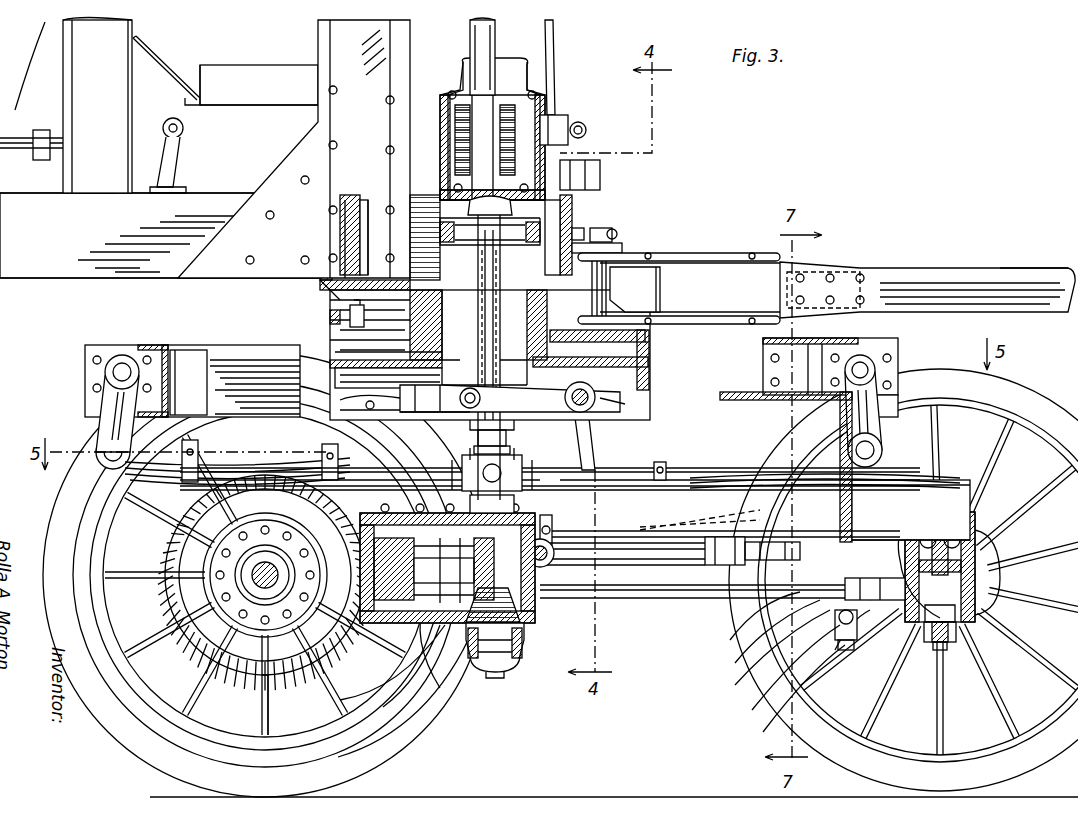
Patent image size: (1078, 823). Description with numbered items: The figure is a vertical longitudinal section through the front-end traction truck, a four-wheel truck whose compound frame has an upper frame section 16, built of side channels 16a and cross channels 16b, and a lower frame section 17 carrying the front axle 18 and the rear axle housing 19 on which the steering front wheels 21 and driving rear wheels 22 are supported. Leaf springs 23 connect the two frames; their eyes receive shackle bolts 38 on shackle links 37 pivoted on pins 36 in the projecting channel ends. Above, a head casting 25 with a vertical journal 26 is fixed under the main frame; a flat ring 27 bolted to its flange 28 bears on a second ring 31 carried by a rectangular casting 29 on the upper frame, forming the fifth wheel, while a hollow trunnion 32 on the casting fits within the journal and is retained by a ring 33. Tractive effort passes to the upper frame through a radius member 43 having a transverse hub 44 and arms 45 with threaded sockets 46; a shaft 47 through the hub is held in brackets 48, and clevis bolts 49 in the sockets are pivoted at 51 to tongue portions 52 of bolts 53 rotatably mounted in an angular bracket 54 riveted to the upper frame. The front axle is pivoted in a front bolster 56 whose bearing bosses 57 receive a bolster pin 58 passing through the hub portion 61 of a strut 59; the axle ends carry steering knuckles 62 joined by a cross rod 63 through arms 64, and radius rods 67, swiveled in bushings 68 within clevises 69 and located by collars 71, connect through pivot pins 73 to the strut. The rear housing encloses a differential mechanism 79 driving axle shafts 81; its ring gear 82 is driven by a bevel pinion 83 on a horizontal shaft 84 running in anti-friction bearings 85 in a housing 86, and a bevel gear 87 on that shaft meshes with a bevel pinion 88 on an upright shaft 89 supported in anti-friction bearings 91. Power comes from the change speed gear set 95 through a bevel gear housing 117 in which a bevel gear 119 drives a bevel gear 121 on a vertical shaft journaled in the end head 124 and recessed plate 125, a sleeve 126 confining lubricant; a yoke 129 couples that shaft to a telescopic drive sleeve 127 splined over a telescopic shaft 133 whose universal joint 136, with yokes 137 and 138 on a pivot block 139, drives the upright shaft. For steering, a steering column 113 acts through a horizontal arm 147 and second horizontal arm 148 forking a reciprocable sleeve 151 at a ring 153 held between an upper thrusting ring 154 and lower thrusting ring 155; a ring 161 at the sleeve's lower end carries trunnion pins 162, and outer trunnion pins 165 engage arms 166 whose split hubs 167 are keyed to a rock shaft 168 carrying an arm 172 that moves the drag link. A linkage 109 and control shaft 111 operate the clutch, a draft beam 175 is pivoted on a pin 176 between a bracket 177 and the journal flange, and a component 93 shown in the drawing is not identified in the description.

The upper frame section 16 is at (78, 330).
The side channels 16a is at (222, 360).
The cross channels 16b is at (160, 345).
The lower frame section 17 is at (950, 483).
The front axle 18 is at (925, 650).
The rear axle housing 19 is at (205, 598).
The front wheels 21 is at (928, 700).
The rear wheels 22 is at (195, 660).
The leaf springs 23 is at (700, 470).
The head casting 25 is at (312, 292).
The vertical journal 26 is at (412, 312).
The flat ring 27 is at (342, 320).
The flange 28 is at (350, 312).
The rectangular casting 29 is at (336, 372).
The fifth wheel section 31 is at (336, 354).
The hollow trunnion 32 is at (475, 357).
The ring 33 is at (428, 290).
The pins 36 is at (113, 380).
The shackle links 37 is at (105, 400).
The shackle bolts 38 is at (108, 470).
The radius member 43 is at (600, 580).
The transverse hub 44 is at (605, 598).
The arms 45 is at (640, 570).
The threaded sockets 46 is at (700, 600).
The shaft 47 is at (620, 545).
The brackets 48 is at (553, 528).
The clevis bolts 49 is at (765, 540).
The pivotal connection 51 is at (846, 520).
The tongue portions 52 is at (753, 623).
The bolts 53 is at (763, 638).
The angular bracket 54 is at (882, 455).
The front bolster 56 is at (978, 540).
The bearing bosses 57 is at (928, 540).
The bolster pin 58 is at (1000, 530).
The strut 59 is at (890, 645).
The hub portion 61 is at (940, 545).
The steering knuckles 62 is at (945, 652).
The cross rod 63 is at (838, 645).
The arms 64 is at (830, 665).
The radius rods 67 is at (660, 600).
The bushing 68 is at (780, 675).
The clevis 69 is at (789, 697).
The collar 71 is at (769, 653).
The pivot pin 73 is at (832, 650).
The differential mechanism 79 is at (202, 584).
The axle shafts 81 is at (250, 590).
The ring gear 82 is at (293, 672).
The bevel pinion 83 is at (330, 678).
The horizontal shaft 84 is at (340, 658).
The anti-friction bearings 85 is at (392, 671).
The housing 86 is at (380, 720).
The bevel gear 87 is at (435, 644).
The bevel pinion 88 is at (530, 620).
The upright shaft 89 is at (530, 605).
The anti-friction bearings 91 is at (522, 663).
The frame 93 is at (48, 78).
The change speed gear set 95 is at (248, 100).
The linkage 109 is at (160, 207).
The control shaft 111 is at (183, 128).
The steering column 113 is at (470, 22).
The bevel gear housing 117 is at (552, 90).
The bevel gear 119 is at (596, 122).
The bevel gear 121 is at (568, 120).
The end head 124 is at (527, 75).
The recessed plate 125 is at (575, 215).
The sleeve 126 is at (455, 145).
The telescopic drive sleeve 127 is at (618, 234).
The yoke 129 is at (470, 212).
The telescopic shaft 133 is at (506, 436).
The universal joint 136 is at (522, 470).
The yoke 137 is at (510, 450).
The yoke 138 is at (652, 470).
The pivot block 139 is at (478, 424).
The horizontal arm 147 is at (578, 228).
The second horizontal arm 148 is at (360, 235).
The reciprocable sleeve 151 is at (560, 320).
The ring 153 is at (600, 228).
The upper thrusting ring 154 is at (345, 213).
The lower thrusting ring 155 is at (294, 149).
The ring 161 is at (373, 407).
The trunnion pins 162 is at (445, 412).
The trunnion pins 165 is at (510, 397).
The arms 166 is at (650, 340).
The split hubs 167 is at (650, 358).
The rock shaft 168 is at (620, 398).
The arm 172 is at (592, 440).
The draft beam 175 is at (1010, 268).
The pin 176 is at (640, 262).
The bracket 177 is at (622, 248).